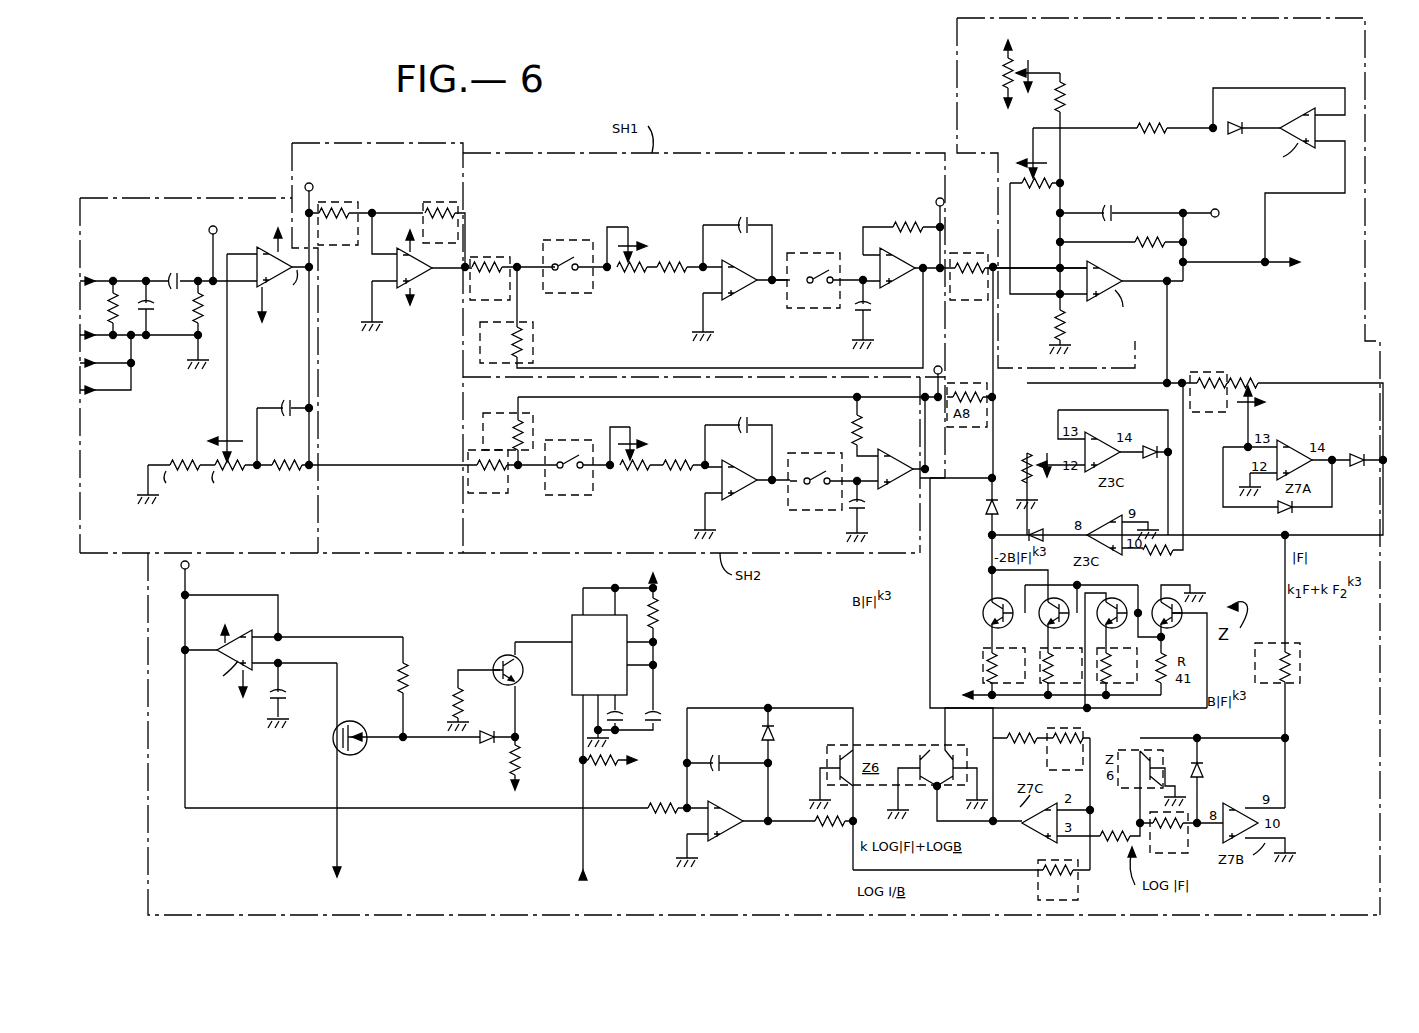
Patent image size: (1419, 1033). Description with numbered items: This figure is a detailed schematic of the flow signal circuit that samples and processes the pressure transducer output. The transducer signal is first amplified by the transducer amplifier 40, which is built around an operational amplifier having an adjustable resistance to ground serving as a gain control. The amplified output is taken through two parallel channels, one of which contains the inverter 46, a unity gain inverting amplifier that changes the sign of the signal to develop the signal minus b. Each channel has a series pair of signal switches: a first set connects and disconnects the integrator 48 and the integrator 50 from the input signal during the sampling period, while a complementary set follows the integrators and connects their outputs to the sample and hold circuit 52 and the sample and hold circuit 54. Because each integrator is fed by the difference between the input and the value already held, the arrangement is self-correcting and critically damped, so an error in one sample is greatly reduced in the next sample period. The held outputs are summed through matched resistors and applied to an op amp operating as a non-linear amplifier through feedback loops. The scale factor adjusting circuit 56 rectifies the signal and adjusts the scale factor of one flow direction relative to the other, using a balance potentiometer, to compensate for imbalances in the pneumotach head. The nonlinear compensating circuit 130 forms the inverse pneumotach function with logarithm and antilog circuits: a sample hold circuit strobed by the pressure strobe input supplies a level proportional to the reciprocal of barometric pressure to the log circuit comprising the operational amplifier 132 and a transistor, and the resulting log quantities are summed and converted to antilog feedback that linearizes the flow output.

The transducer amplifier 40 is at (151, 195).
The inverter 46 is at (362, 143).
The integrator 48 is at (686, 220).
The integrator 50 is at (675, 505).
The sample and hold circuit 52 is at (871, 205).
The sample and hold circuit 54 is at (831, 525).
The scale factor adjusting circuit 56 is at (955, 46).
The nonlinear compensating circuit 130 is at (148, 718).
The operational amplifier 132 is at (752, 840).